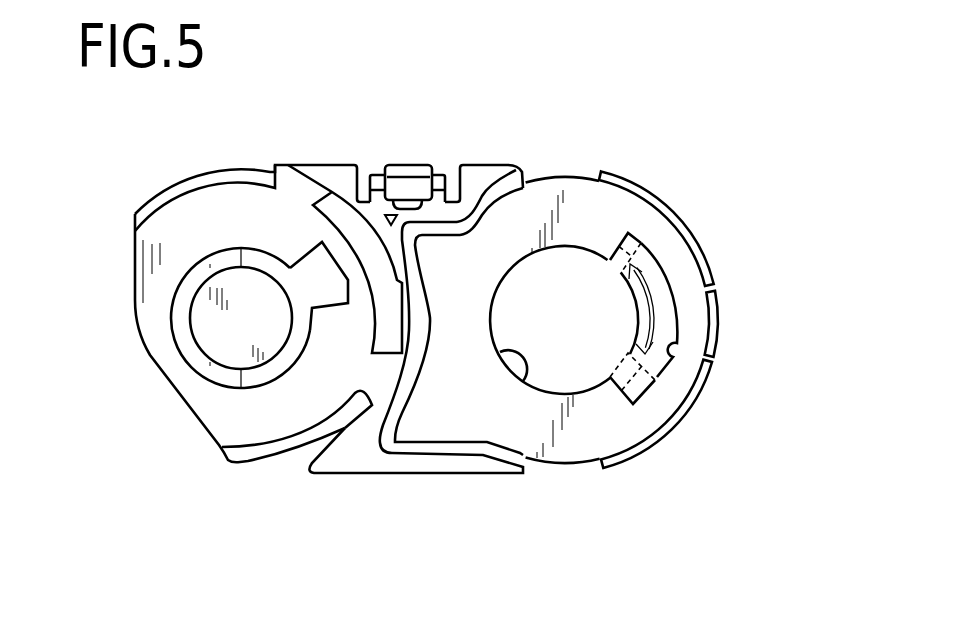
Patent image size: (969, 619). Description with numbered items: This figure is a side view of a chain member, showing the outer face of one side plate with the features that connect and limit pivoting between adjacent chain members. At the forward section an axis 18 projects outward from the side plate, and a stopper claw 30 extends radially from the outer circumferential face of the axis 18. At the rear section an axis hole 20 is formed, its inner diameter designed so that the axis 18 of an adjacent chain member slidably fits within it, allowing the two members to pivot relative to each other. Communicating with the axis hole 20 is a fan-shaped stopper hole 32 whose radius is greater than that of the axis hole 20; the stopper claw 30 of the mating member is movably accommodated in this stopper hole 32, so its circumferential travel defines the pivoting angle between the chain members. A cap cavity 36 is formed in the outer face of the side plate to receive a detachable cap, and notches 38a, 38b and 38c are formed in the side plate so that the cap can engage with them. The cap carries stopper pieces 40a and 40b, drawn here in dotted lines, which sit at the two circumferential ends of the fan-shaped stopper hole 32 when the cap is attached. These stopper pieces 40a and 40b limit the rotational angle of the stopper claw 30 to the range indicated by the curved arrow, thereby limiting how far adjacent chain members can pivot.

The axis 18 is at (205, 357).
The axis hole 20 is at (522, 381).
The stopper claw 30 is at (320, 263).
The stopper hole 32 is at (672, 352).
The cap cavity 36 is at (400, 452).
The notch 38a is at (565, 466).
The notch 38b is at (720, 326).
The notch 38c is at (566, 176).
The stopper piece 40a is at (643, 250).
The stopper piece 40b is at (643, 392).